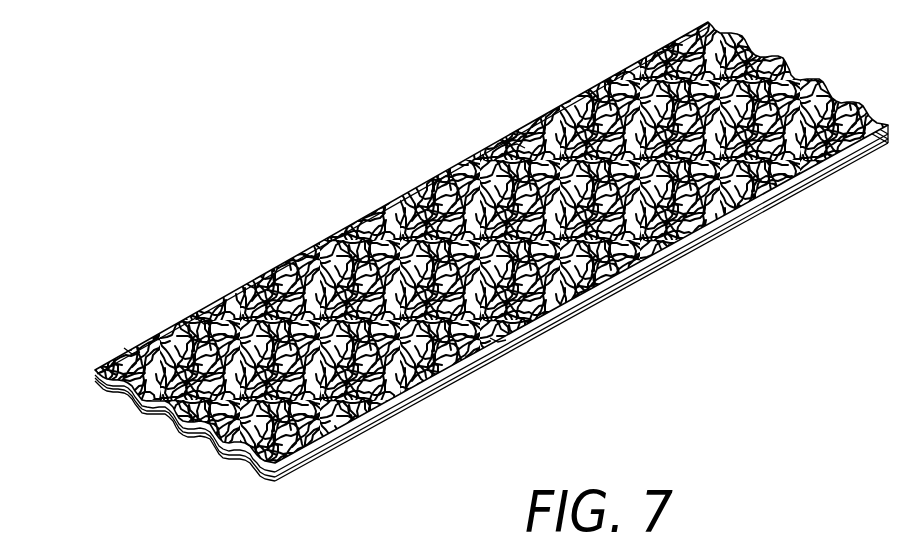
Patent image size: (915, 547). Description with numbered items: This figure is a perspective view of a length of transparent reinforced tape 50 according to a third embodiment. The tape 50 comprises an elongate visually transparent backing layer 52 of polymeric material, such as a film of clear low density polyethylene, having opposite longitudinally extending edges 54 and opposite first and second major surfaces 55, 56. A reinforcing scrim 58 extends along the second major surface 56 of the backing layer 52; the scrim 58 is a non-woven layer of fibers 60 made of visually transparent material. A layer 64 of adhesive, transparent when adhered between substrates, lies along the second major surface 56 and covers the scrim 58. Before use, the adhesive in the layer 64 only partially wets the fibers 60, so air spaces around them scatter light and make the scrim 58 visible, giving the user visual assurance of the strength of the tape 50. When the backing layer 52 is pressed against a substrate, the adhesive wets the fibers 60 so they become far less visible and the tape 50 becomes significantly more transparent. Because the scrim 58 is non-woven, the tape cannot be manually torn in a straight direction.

The transparent reinforced tape 50 is at (290, 207).
The backing layer 52 is at (174, 430).
The longitudinally extending edges 54 is at (97, 374).
The first major surface 55 is at (137, 416).
The second major surface 56 is at (128, 352).
The reinforcing scrim 58 is at (497, 343).
The fibers 60 is at (517, 131).
The layer of adhesive 64 is at (200, 322).